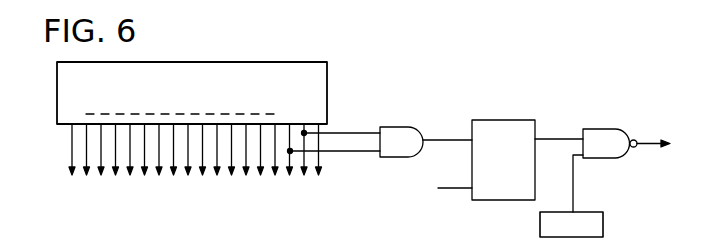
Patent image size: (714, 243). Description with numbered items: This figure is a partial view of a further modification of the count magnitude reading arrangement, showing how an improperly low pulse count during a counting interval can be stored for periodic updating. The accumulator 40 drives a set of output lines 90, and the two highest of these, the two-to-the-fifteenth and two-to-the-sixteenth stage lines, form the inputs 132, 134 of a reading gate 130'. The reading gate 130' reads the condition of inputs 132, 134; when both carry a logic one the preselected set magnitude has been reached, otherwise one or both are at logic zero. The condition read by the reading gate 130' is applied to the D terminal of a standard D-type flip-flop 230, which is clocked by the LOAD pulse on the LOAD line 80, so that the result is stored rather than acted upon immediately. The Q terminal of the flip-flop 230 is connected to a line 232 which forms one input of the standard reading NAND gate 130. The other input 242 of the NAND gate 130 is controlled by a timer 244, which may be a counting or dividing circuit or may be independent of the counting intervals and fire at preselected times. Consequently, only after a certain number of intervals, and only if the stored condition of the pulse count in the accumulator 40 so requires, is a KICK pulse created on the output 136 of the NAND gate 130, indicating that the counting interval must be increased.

The accumulator 40 is at (270, 61).
The lines 90 is at (87, 147).
The input 134 is at (362, 131).
The input 132 is at (353, 153).
The reading gate 130' is at (426, 127).
The D-type flip-flop 230 is at (500, 128).
The LOAD line 80 is at (443, 190).
The line 232 is at (557, 134).
The NAND gate 130 is at (613, 126).
The output 136 is at (648, 147).
The input 242 is at (573, 183).
The timer 244 is at (603, 225).